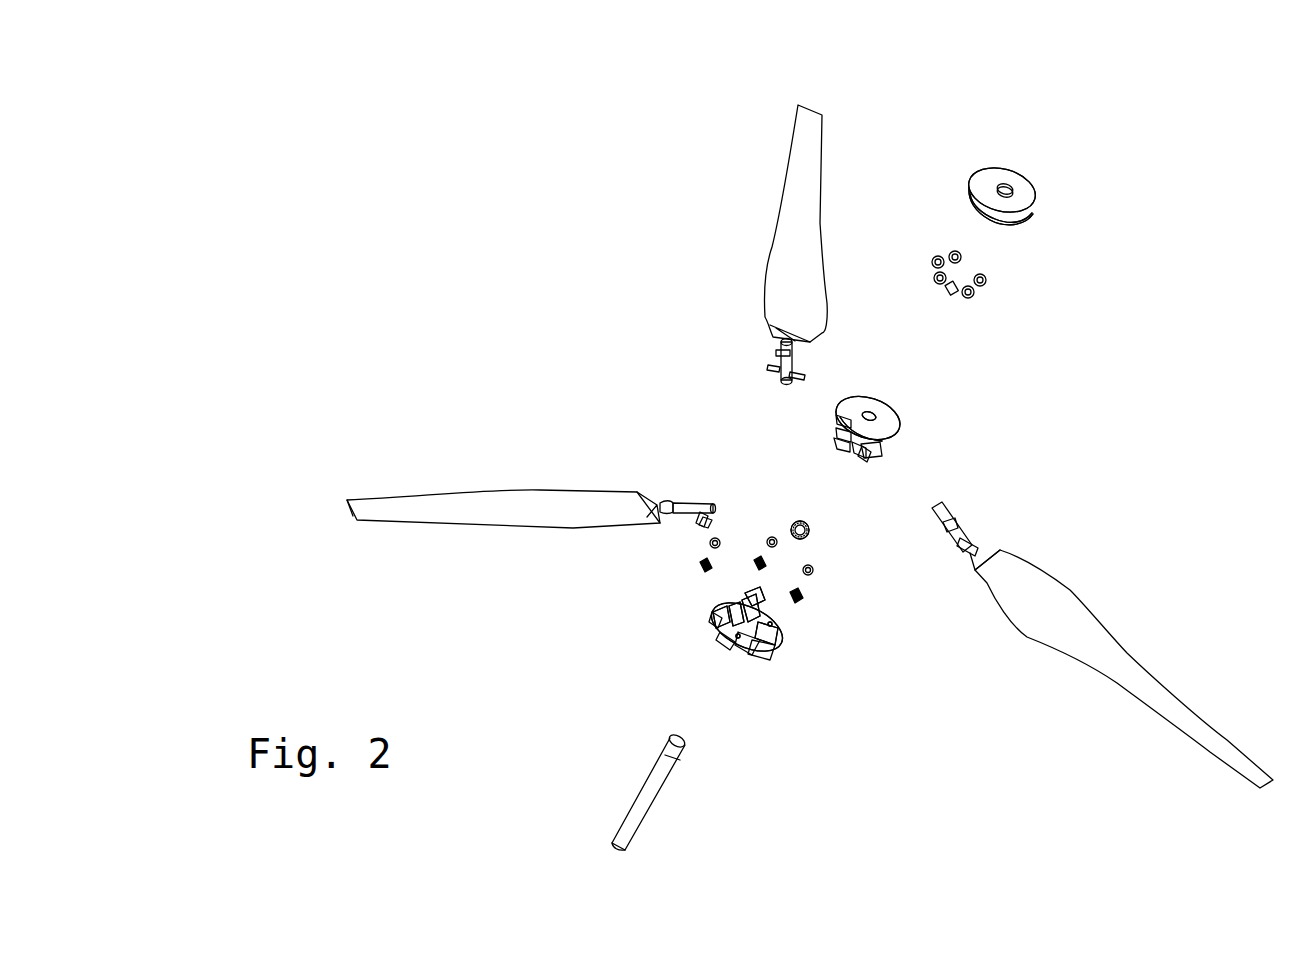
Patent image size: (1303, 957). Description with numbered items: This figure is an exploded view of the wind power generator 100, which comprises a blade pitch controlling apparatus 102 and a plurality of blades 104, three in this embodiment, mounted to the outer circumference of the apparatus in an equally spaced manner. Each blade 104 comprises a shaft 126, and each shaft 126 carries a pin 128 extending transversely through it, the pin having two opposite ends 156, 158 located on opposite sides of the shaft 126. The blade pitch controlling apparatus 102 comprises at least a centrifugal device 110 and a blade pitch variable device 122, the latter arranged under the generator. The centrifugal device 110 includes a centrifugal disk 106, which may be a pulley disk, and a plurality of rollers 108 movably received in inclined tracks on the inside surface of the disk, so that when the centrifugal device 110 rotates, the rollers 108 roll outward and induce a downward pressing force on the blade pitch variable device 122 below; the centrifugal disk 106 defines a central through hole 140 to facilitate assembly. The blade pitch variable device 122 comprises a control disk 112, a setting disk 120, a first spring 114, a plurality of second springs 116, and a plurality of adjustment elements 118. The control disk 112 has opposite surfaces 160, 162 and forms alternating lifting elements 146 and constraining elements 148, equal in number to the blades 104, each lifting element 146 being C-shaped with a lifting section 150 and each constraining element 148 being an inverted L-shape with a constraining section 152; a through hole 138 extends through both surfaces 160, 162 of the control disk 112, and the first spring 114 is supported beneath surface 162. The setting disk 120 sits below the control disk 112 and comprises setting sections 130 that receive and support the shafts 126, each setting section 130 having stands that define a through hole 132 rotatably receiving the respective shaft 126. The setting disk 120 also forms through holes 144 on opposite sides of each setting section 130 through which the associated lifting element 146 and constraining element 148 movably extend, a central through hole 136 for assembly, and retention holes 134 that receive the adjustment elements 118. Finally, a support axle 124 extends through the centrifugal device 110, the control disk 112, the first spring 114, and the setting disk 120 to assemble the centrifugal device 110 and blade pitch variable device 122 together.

The wind power generator 100 is at (600, 250).
The blade pitch controlling apparatus 102 is at (1012, 137).
The blades 104 is at (784, 163).
The centrifugal disk 106 is at (1025, 203).
The rollers 108 is at (985, 273).
The centrifugal device 110 is at (1145, 203).
The control disk 112 is at (858, 450).
The first spring 114 is at (807, 537).
The second springs 116 is at (812, 576).
The adjustment elements 118 is at (795, 600).
The setting disk 120 is at (753, 650).
The blade pitch variable device 122 is at (938, 757).
The support axle 124 is at (643, 797).
The shaft 126 is at (777, 353).
The pin 128 is at (772, 373).
The setting sections 130 is at (713, 627).
The through hole 132 is at (715, 617).
The retention holes 134 is at (735, 600).
The through hole 136 is at (745, 637).
The through hole 138 is at (883, 418).
The through hole 140 is at (1012, 187).
The through holes 144 is at (723, 640).
The lifting elements 146 is at (848, 450).
The constraining elements 148 is at (870, 453).
The lifting section 150 is at (851, 447).
The constraining section 152 is at (887, 448).
The end of pin 156 is at (765, 370).
The end of pin 158 is at (815, 373).
The surface of control disk 160 is at (868, 399).
The surface of control disk 162 is at (837, 409).